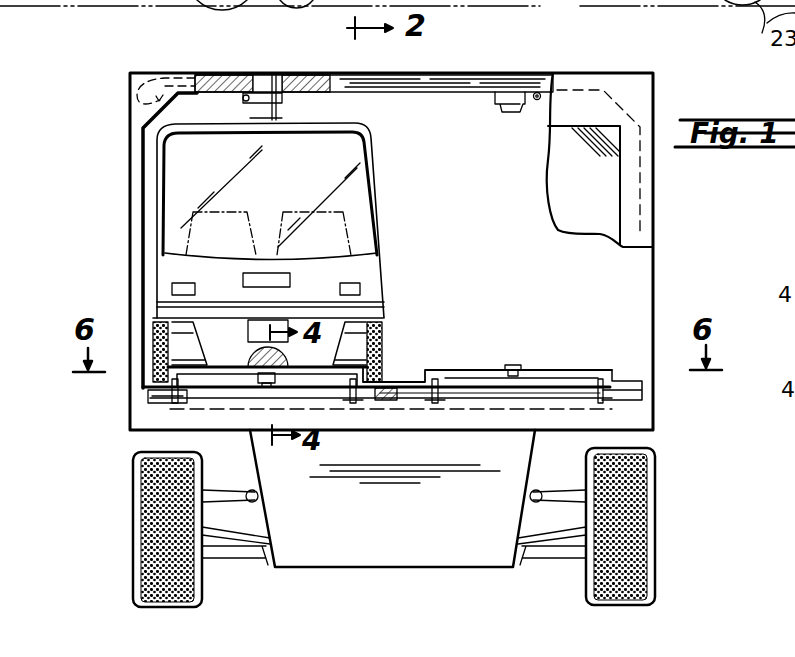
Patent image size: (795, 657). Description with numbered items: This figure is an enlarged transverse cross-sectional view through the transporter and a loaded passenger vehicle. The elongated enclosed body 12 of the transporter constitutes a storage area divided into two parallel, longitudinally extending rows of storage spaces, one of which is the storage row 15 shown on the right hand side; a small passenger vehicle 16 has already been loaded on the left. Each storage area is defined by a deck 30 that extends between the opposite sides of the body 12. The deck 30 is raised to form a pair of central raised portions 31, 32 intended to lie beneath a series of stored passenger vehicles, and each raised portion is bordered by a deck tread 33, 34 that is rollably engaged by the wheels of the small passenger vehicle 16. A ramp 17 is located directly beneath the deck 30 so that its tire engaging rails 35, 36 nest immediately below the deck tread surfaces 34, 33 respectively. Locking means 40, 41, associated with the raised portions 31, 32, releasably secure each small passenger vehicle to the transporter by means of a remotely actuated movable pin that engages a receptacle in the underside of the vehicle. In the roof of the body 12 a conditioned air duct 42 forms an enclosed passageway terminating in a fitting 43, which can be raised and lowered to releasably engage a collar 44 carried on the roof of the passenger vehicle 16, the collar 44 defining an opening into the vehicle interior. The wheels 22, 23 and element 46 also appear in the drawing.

The body 12 is at (130, 132).
The storage row 15 is at (488, 290).
The small passenger vehicle 16 is at (371, 164).
The ramp 17 is at (162, 400).
The wheel 22 is at (282, 7).
The wheels 23 is at (147, 519).
The deck 30 is at (543, 369).
The raised portion 31 is at (482, 376).
The raised portion 32 is at (335, 378).
The deck tread 33 is at (428, 370).
The deck tread 34 is at (622, 375).
The tire engaging rail 35 is at (150, 393).
The tire engaging rail 36 is at (380, 390).
The locking means 40 is at (510, 356).
The locking means 41 is at (258, 354).
The conditioned air duct 42 is at (245, 76).
The fitting 43 is at (280, 108).
The collar 44 is at (255, 118).
The element 46 is at (782, 349).